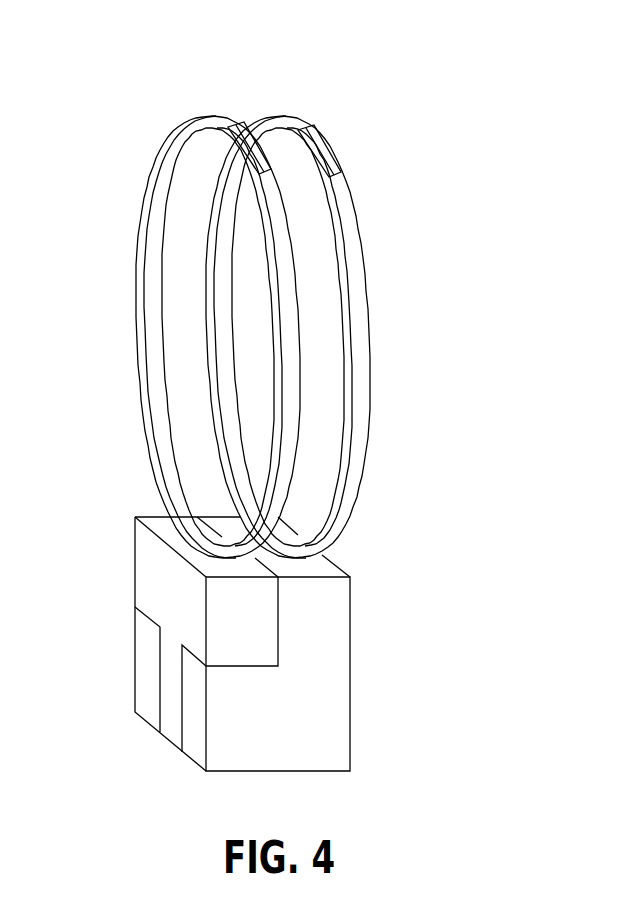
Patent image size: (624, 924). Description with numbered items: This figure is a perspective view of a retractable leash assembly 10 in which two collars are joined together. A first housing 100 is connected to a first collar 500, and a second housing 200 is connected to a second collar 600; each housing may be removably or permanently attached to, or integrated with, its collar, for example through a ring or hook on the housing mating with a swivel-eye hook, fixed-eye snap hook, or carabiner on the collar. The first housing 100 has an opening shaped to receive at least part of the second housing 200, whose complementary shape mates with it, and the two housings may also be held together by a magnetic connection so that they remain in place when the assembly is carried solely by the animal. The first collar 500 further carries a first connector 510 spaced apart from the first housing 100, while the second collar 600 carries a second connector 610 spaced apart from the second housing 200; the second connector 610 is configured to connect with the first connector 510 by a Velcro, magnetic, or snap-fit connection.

The retractable leash assembly 10 is at (460, 82).
The first housing 100 is at (350, 628).
The second housing 200 is at (135, 583).
The first collar 500 is at (355, 212).
The first connector 510 is at (325, 139).
The second collar 600 is at (144, 214).
The second connector 610 is at (233, 127).